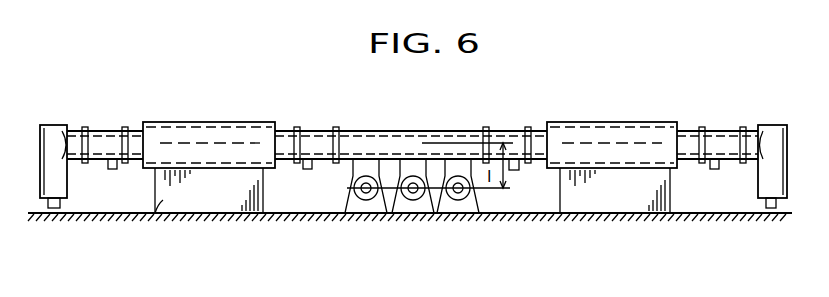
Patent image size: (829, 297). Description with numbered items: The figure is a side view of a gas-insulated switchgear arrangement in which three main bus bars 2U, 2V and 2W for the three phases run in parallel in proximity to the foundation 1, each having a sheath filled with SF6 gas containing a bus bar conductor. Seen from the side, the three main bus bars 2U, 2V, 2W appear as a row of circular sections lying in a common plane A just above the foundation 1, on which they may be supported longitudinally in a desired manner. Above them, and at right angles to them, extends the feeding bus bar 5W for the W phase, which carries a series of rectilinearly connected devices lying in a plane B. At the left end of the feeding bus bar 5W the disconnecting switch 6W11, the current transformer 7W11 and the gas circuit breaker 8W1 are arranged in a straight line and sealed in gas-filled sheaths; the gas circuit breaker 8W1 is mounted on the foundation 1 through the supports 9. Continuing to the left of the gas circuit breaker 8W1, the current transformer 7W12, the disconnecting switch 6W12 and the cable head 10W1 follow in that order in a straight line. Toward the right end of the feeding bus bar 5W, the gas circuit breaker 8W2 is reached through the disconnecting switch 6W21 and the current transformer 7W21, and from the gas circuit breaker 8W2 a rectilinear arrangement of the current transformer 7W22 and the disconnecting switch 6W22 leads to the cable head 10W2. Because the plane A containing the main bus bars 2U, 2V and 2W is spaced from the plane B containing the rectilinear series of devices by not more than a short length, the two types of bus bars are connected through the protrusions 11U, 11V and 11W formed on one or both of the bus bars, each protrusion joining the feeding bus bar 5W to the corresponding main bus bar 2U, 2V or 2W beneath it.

The foundation 1 is at (635, 218).
The feeding bus bar 5W is at (376, 128).
The plane B is at (437, 143).
The cable head 10W1 is at (55, 125).
The cable head 10W2 is at (770, 125).
The gas circuit breaker 8W1 is at (216, 128).
The gas circuit breaker 8W2 is at (632, 125).
The support 9 is at (155, 210).
The current transformer 7W12 is at (135, 128).
The current transformer 7W11 is at (285, 162).
The current transformer 7W21 is at (538, 160).
The current transformer 7W22 is at (690, 132).
The disconnecting switch 6W12 is at (95, 160).
The disconnecting switch 6W11 is at (318, 128).
The disconnecting switch 6W21 is at (502, 127).
The disconnecting switch 6W22 is at (728, 162).
The plane A is at (513, 198).
The main bus bar 2U is at (366, 200).
The main bus bar 2V is at (416, 212).
The main bus bar 2W is at (461, 212).
The protrusion 11U is at (338, 200).
The protrusion 11V is at (398, 214).
The protrusion 11W is at (487, 195).